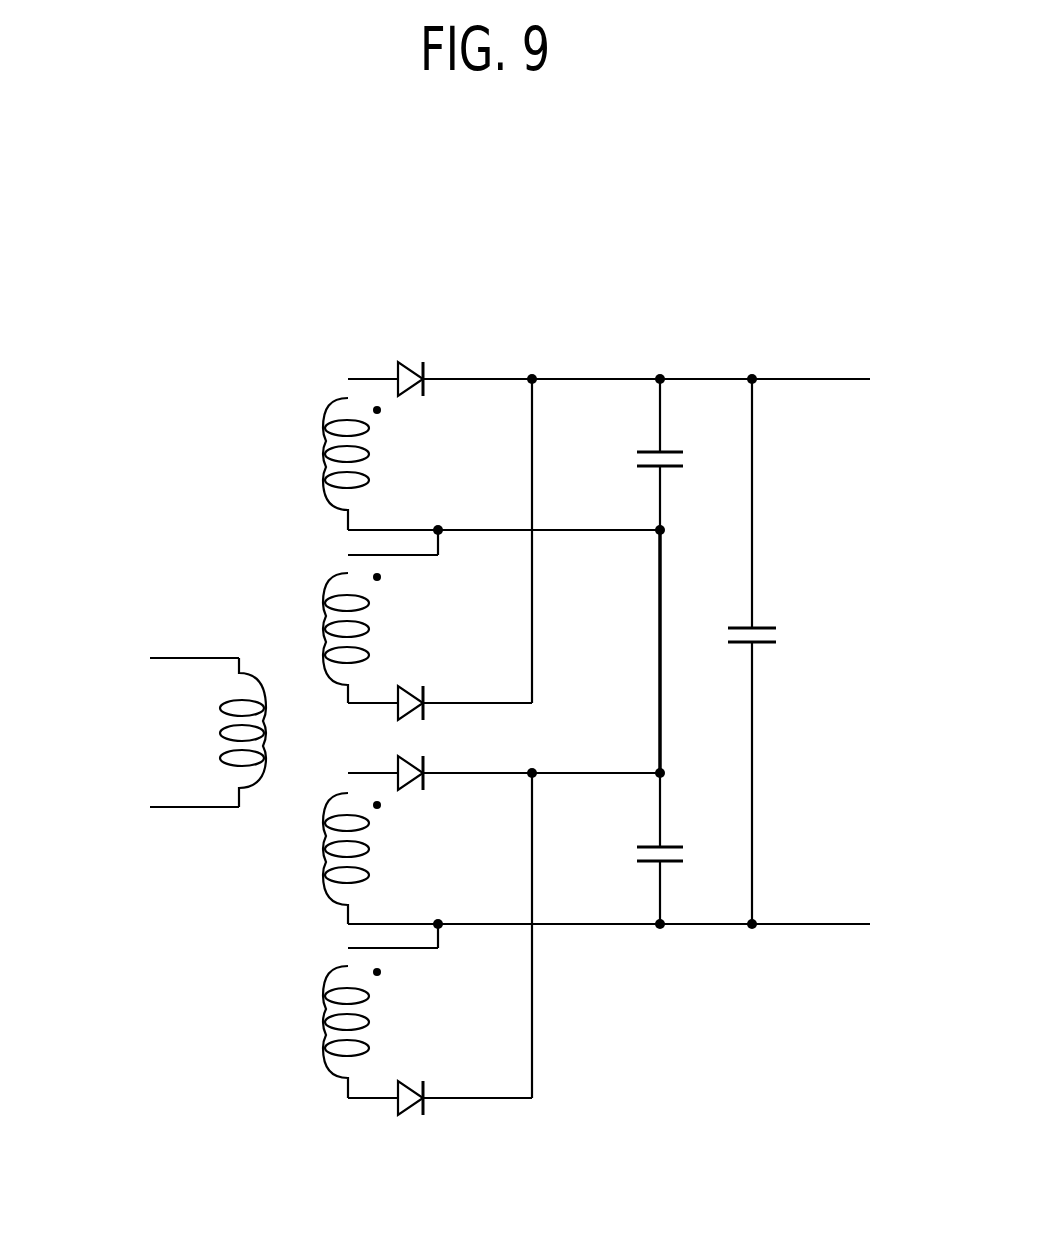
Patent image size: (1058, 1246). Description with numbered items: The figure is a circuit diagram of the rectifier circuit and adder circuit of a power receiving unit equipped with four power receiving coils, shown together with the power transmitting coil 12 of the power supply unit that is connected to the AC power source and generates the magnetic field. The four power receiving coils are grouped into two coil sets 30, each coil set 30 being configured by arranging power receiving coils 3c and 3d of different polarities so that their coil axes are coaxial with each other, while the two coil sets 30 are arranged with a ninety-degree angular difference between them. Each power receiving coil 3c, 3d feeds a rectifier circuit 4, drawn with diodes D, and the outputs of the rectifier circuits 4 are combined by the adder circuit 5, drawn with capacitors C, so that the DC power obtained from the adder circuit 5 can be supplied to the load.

The coil set 30 is at (222, 312).
The power receiving coil 3c is at (333, 400).
The power receiving coil 3d is at (333, 573).
The power transmitting coil 12 is at (258, 765).
The rectifier circuit 4 is at (459, 726).
The adder circuit 5 is at (702, 562).
The diode D is at (410, 718).
The capacitor C is at (702, 658).